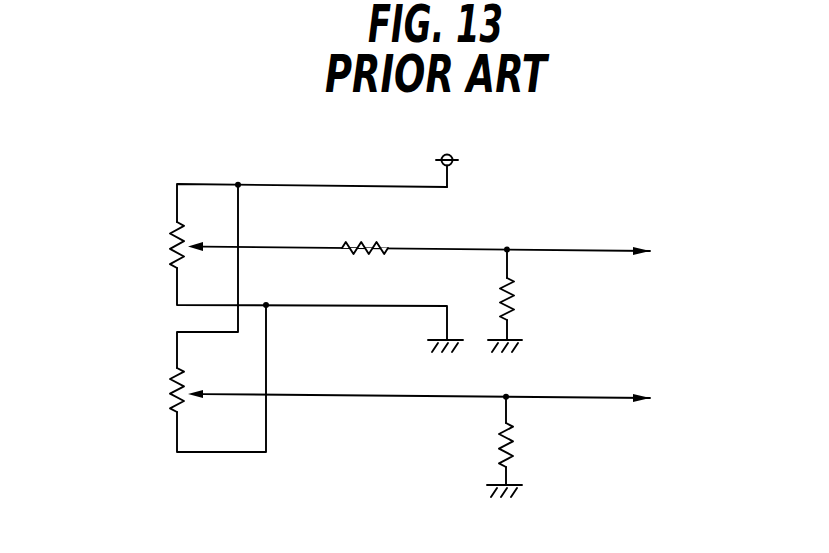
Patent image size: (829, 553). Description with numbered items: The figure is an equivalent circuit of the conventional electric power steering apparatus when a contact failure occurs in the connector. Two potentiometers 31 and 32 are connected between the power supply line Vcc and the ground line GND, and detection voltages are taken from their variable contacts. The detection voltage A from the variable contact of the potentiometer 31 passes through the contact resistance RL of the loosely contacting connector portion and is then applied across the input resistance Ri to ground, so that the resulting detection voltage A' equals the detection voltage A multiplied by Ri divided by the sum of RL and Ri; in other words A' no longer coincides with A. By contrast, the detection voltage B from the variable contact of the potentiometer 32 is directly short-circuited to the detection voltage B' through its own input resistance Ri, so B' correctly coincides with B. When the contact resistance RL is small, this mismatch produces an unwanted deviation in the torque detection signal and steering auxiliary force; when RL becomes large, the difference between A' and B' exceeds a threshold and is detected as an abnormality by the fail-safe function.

The potentiometer 31 is at (173, 229).
The potentiometer 32 is at (171, 374).
The detection voltage A is at (419, 232).
The detection voltage B is at (419, 382).
The contact resistance RL is at (365, 265).
The input resistance Ri is at (514, 372).
The ground line GND is at (464, 360).
The power supply line Vcc is at (467, 169).